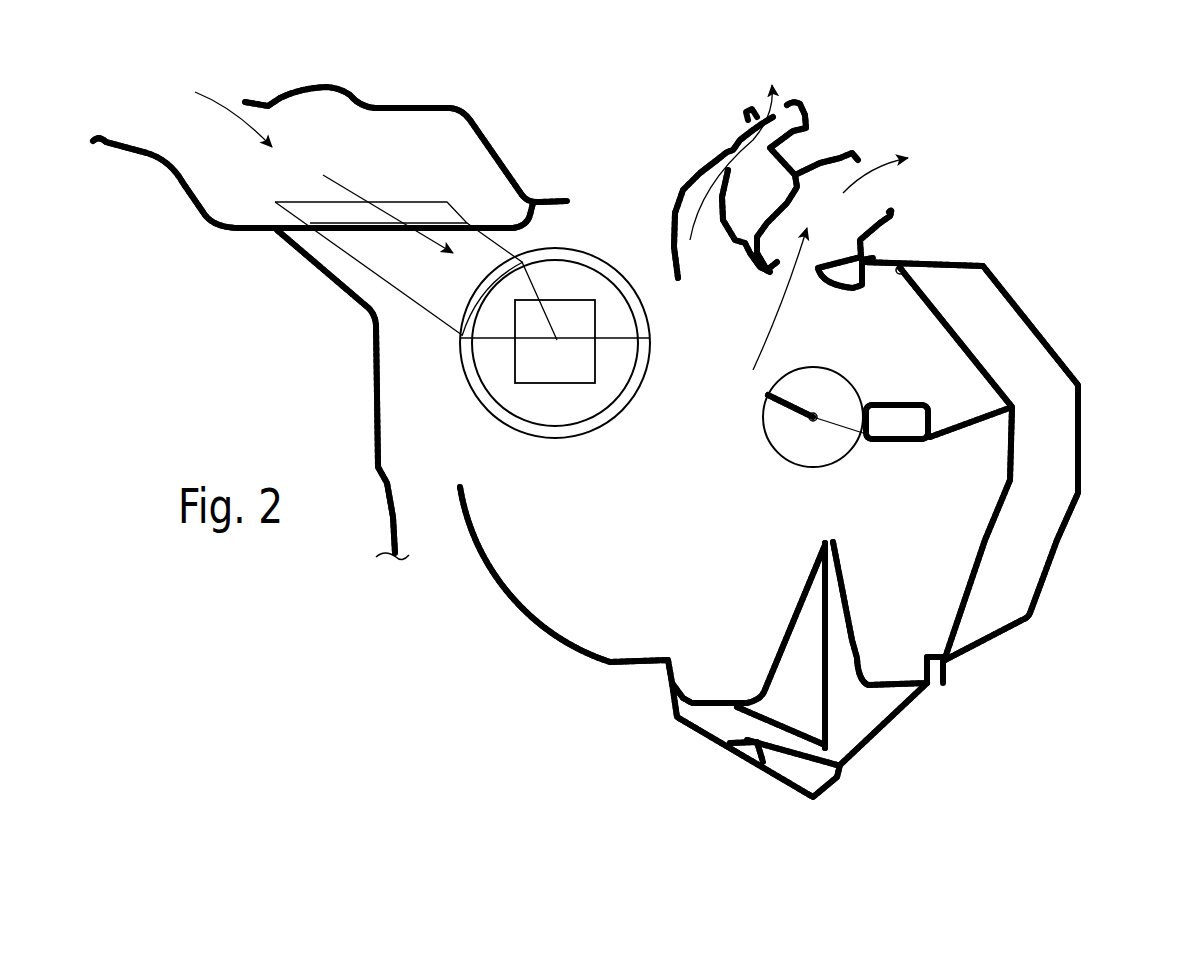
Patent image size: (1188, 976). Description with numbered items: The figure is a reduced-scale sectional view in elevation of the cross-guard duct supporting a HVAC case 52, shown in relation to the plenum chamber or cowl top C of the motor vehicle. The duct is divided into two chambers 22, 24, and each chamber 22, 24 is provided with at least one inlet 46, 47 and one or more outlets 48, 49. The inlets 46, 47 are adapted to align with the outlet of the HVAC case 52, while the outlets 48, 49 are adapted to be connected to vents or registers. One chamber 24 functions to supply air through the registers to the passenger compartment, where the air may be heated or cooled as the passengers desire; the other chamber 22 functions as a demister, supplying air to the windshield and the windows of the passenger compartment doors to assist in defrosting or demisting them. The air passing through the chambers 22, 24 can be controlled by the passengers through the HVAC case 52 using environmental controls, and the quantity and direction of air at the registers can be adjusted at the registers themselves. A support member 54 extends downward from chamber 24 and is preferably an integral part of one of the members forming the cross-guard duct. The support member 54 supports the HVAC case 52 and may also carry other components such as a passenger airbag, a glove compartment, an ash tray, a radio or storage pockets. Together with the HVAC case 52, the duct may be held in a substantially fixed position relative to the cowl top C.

The cowl top C is at (387, 105).
The chamber 22 is at (813, 118).
The chamber 24 is at (848, 230).
The inlet 46 is at (708, 167).
The inlet 47 is at (773, 291).
The outlet 48 is at (785, 103).
The outlet 49 is at (873, 185).
The HVAC case 52 is at (1013, 453).
The support member 54 is at (932, 430).